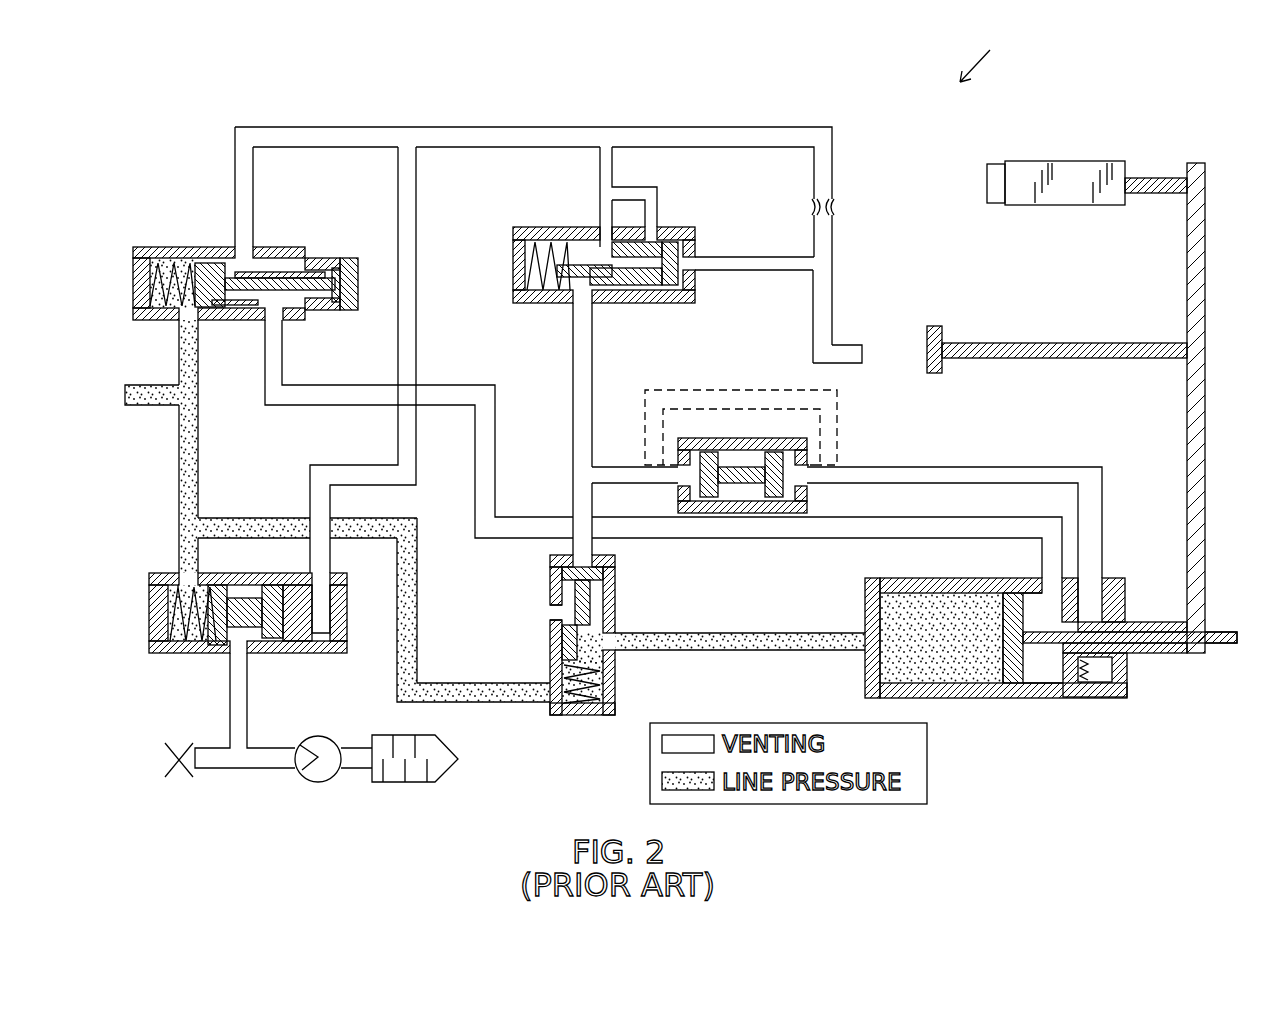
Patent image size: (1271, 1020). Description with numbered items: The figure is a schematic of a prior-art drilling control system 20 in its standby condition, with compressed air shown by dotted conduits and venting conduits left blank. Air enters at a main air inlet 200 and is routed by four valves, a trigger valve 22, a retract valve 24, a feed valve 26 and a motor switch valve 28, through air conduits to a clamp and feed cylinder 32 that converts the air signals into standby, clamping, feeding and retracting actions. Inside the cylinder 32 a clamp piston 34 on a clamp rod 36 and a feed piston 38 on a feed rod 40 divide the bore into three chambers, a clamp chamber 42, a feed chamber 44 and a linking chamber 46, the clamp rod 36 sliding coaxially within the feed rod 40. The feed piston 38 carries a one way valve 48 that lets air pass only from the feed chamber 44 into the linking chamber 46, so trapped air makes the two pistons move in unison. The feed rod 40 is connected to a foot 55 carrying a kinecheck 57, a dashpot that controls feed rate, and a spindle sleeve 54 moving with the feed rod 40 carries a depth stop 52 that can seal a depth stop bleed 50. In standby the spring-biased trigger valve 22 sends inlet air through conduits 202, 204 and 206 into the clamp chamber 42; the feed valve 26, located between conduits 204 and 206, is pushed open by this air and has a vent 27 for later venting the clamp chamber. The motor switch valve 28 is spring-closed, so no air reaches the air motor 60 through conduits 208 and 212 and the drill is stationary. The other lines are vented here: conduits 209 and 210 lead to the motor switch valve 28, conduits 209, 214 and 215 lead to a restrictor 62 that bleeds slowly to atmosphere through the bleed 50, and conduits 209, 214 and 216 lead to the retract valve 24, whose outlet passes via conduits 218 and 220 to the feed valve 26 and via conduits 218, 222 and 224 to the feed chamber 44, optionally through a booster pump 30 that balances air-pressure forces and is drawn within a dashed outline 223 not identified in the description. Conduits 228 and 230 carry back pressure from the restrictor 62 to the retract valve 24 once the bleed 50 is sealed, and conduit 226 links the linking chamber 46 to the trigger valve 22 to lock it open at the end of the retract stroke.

The control system 20 is at (1001, 60).
The trigger valve 22 is at (133, 262).
The retract valve 24 is at (548, 227).
The feed valve 26 is at (607, 563).
The vent 27 is at (550, 614).
The motor switch valve 28 is at (149, 605).
The booster pump 30 is at (778, 438).
The clamp and feed cylinder 32 is at (865, 678).
The clamp piston 34 is at (1012, 698).
The clamp rod 36 is at (1222, 632).
The feed piston 38 is at (1070, 700).
The feed rod 40 is at (1152, 632).
The clamp chamber 42 is at (905, 593).
The feed chamber 44 is at (1095, 598).
The linking chamber 46 is at (1028, 603).
The one way valve 48 is at (1112, 668).
The depth stop bleed 50 is at (862, 352).
The depth stop 52 is at (935, 373).
The spindle sleeve 54 is at (1060, 358).
The foot 55 is at (1187, 430).
The kinecheck 57 is at (1065, 205).
The air motor 60 is at (330, 740).
The restrictor 62 is at (838, 207).
The main air inlet 200 is at (125, 392).
The conduit 202 is at (198, 452).
The conduit 204 is at (417, 585).
The conduit 206 is at (740, 633).
The conduit 208 is at (198, 558).
The conduit 209 is at (292, 147).
The conduit 210 is at (416, 297).
The conduit 212 is at (247, 668).
The conduit 214 is at (452, 147).
The conduit 215 is at (777, 147).
The conduit 216 is at (612, 175).
The conduit 218 is at (592, 342).
The conduit 220 is at (592, 502).
The conduit 222 is at (617, 466).
The solenoid valve assembly 223 is at (710, 392).
The conduit 224 is at (995, 467).
The conduit 226 is at (495, 465).
The conduit 228 is at (832, 277).
The conduit 230 is at (750, 270).